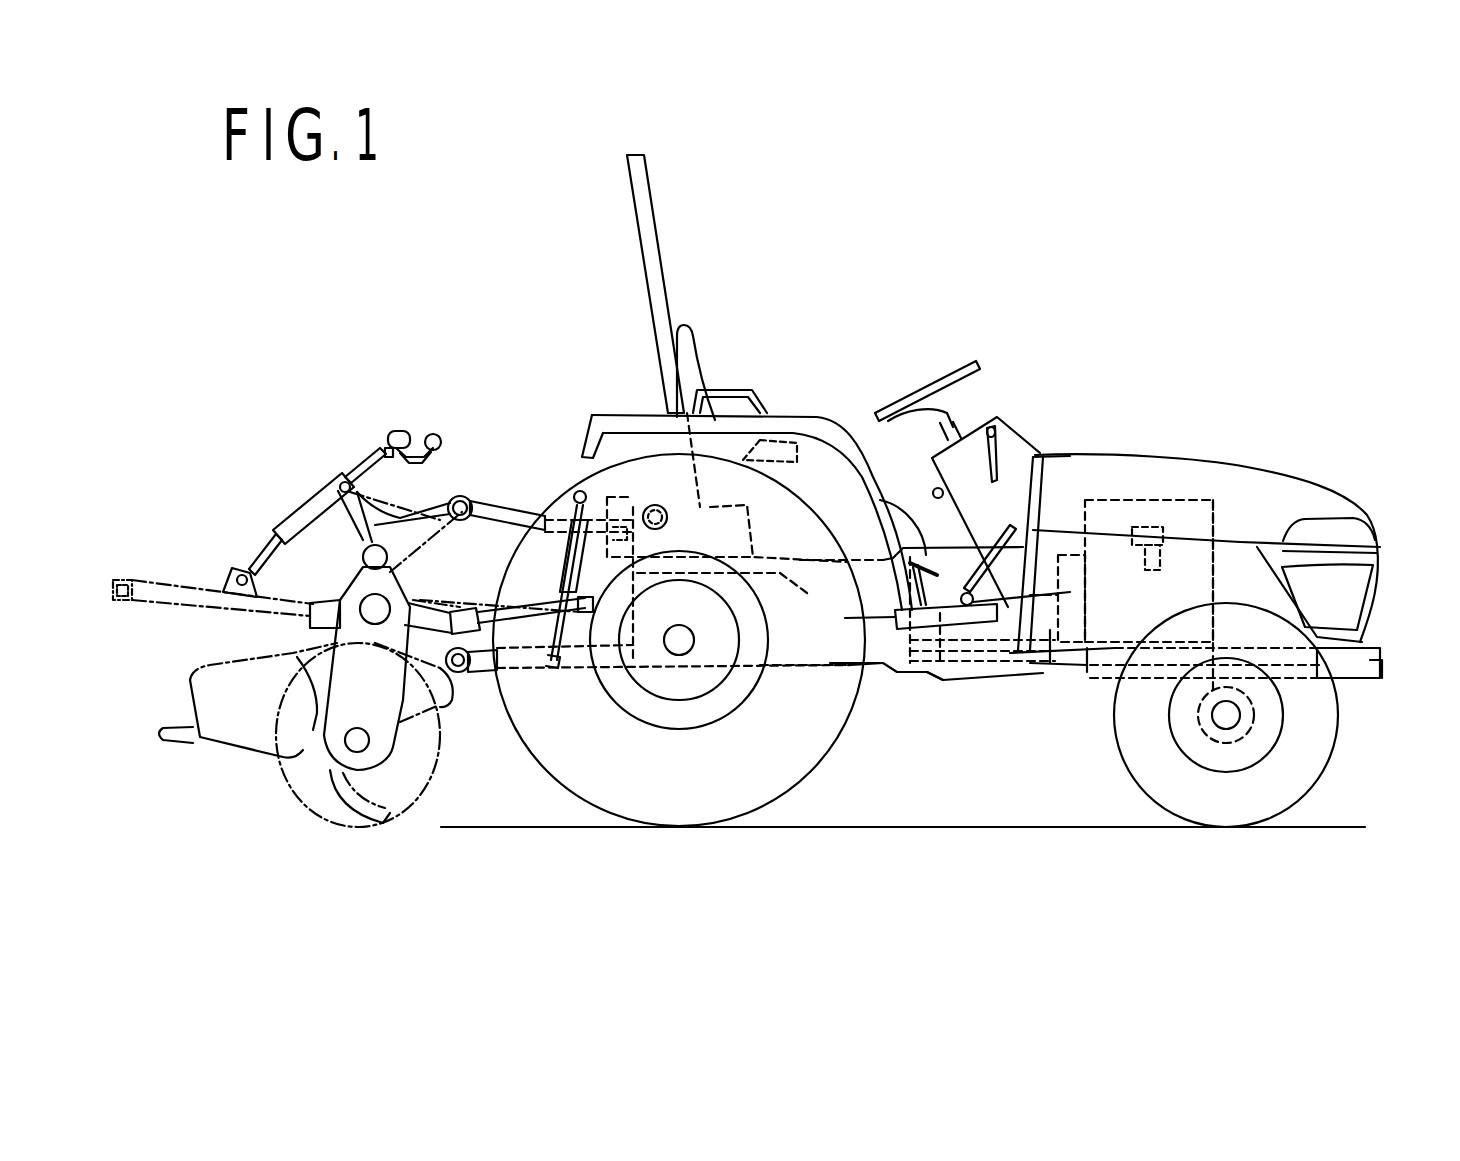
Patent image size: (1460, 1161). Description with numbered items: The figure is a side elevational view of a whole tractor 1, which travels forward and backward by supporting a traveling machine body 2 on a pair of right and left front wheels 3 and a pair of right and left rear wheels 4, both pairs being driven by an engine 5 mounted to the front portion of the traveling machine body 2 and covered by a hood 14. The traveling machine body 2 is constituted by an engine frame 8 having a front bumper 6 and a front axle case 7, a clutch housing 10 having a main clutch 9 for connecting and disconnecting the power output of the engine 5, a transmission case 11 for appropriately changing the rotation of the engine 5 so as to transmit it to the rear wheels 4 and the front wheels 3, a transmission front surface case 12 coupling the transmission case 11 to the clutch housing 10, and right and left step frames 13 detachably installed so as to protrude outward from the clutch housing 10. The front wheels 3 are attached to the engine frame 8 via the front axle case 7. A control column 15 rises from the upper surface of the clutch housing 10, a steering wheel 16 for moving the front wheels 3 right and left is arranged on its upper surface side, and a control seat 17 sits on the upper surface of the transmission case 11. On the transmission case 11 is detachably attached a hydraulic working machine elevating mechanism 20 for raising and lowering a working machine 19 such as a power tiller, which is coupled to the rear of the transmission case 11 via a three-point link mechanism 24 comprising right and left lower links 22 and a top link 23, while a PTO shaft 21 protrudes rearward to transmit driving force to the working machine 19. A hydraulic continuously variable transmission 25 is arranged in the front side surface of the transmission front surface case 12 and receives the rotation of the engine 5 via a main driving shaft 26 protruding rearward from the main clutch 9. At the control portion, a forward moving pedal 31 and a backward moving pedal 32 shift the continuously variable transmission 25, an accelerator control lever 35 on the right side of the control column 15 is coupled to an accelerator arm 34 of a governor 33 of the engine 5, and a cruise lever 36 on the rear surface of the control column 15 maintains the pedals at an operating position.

The tractor 1 is at (1104, 206).
The traveling machine body 2 is at (1084, 733).
The front wheels 3 is at (1233, 810).
The rear wheels 4 is at (706, 803).
The engine 5 is at (1247, 537).
The front bumper 6 is at (1367, 677).
The front axle case 7 is at (1203, 727).
The engine frame 8 is at (1102, 663).
The main clutch 9 is at (1057, 627).
The clutch housing 10 is at (1003, 670).
The transmission case 11 is at (797, 668).
The transmission front surface case 12 is at (881, 668).
The step frames 13 is at (938, 680).
The hood 14 is at (1210, 465).
The control column 15 is at (1017, 452).
The steering wheel 16 is at (922, 388).
The control seat 17 is at (693, 370).
The working machine 19 is at (294, 396).
The hydraulic working machine elevating mechanism 20 is at (707, 507).
The PTO shaft 21 is at (590, 665).
The lower links 22 is at (485, 660).
The top link 23 is at (494, 503).
The three-point link mechanism 24 is at (563, 429).
The hydraulic continuously variable transmission 25 is at (982, 677).
The main driving shaft 26 is at (1063, 594).
The forward moving pedal 31 is at (985, 515).
The backward moving pedal 32 is at (883, 503).
The governor 33 is at (1152, 500).
The accelerator arm 34 is at (1265, 533).
The accelerator control lever 35 is at (997, 417).
The cruise lever 36 is at (933, 490).